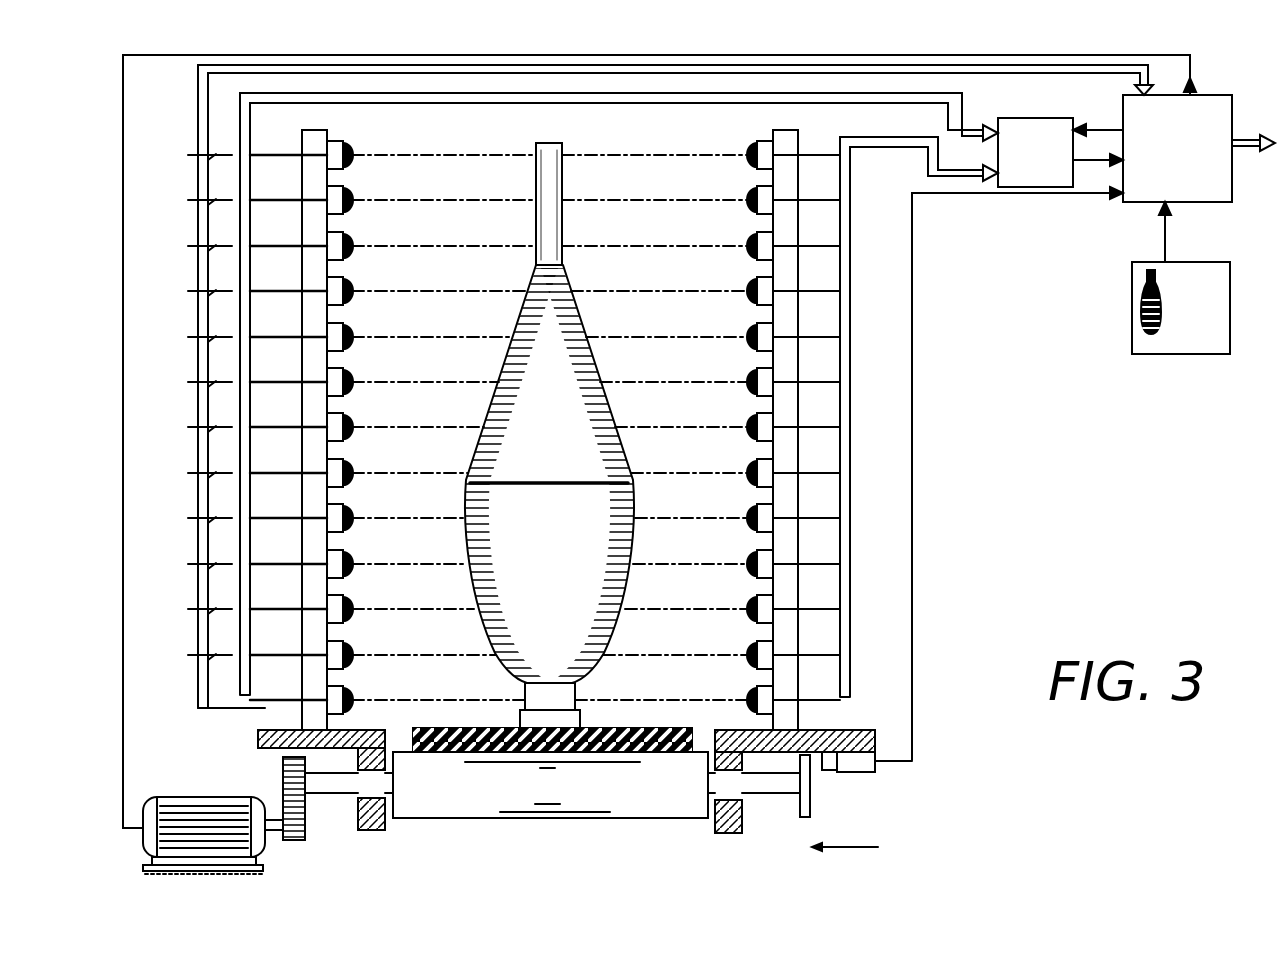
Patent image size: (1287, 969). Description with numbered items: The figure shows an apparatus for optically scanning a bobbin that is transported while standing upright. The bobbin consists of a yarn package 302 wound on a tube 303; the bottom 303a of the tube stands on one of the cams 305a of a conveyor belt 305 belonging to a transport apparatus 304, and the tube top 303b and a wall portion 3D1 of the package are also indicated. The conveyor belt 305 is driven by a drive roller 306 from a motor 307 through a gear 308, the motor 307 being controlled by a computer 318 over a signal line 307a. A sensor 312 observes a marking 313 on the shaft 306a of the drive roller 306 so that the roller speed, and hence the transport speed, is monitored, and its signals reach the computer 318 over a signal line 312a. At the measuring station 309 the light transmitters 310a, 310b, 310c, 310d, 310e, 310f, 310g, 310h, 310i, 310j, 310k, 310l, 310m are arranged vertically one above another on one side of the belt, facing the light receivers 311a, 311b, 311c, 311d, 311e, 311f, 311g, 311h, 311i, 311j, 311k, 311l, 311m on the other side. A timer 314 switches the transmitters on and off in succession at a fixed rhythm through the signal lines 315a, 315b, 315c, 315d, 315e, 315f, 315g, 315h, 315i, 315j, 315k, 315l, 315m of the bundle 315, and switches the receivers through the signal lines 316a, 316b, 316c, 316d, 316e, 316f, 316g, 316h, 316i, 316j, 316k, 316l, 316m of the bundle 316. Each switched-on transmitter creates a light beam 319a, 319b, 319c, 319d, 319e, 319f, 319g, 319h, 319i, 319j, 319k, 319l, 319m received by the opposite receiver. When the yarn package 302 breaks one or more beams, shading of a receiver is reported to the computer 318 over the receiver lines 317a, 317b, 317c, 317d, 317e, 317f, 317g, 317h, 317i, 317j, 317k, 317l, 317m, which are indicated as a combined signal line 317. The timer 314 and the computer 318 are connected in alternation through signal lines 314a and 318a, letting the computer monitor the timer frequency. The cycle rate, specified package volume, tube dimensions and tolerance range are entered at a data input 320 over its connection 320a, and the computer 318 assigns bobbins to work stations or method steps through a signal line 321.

The yarn package 302 is at (549, 413).
The tube 303 is at (536, 152).
The bottom of the tube 303a is at (580, 694).
The neck top opening 303b is at (558, 143).
The container wall 3D1 is at (570, 156).
The transport apparatus 304 is at (865, 851).
The conveyor belt 305 is at (552, 727).
The cams 305a is at (583, 722).
The drive roller 306 is at (488, 818).
The shaft of the drive roller 306a is at (783, 797).
The motor 307 is at (213, 798).
The signal line 307a is at (123, 150).
The gear 308 is at (307, 820).
The measuring station 309 is at (935, 574).
The light transmitter 310m is at (790, 150).
The light transmitter 310l is at (770, 197).
The light transmitter 310k is at (770, 243).
The light transmitter 310j is at (770, 288).
The light transmitter 310i is at (770, 334).
The light transmitter 310h is at (770, 379).
The light transmitter 310g is at (770, 424).
The light transmitter 310f is at (770, 470).
The light transmitter 310e is at (770, 515).
The light transmitter 310d is at (770, 561).
The light transmitter 310c is at (770, 606).
The light transmitter 310b is at (770, 652).
The light transmitter 310a is at (770, 697).
The light receiver 311m is at (354, 154).
The light receiver 311l is at (354, 199).
The light receiver 311k is at (354, 245).
The light receiver 311j is at (354, 290).
The light receiver 311i is at (354, 336).
The light receiver 311h is at (354, 381).
The light receiver 311g is at (354, 426).
The light receiver 311f is at (354, 472).
The light receiver 311e is at (354, 517).
The light receiver 311d is at (354, 563).
The light receiver 311c is at (354, 608).
The light receiver 311b is at (354, 654).
The light receiver 311a is at (354, 699).
The sensor 312 is at (836, 770).
The signal line 312a is at (918, 761).
The marking 313 is at (812, 770).
The timer 314 is at (1035, 117).
The signal line 314a is at (1095, 168).
The signal lines 315 is at (878, 135).
The signal line 315m is at (843, 156).
The signal line 315l is at (843, 201).
The signal line 315k is at (843, 247).
The signal line 315j is at (843, 292).
The signal line 315i is at (843, 338).
The signal line 315h is at (843, 383).
The signal line 315g is at (843, 428).
The signal line 315f is at (843, 474).
The signal line 315e is at (843, 519).
The signal line 315d is at (843, 565).
The signal line 315c is at (843, 610).
The signal line 315b is at (843, 656).
The signal line 315a is at (843, 699).
The signal lines 316 is at (455, 100).
The signal line 316m is at (288, 157).
The signal line 316l is at (288, 202).
The signal line 316k is at (288, 248).
The signal line 316j is at (288, 293).
The signal line 316i is at (288, 339).
The signal line 316h is at (288, 384).
The signal line 316g is at (288, 429).
The signal line 316f is at (288, 475).
The signal line 316e is at (288, 520).
The signal line 316d is at (288, 566).
The signal line 316c is at (288, 611).
The signal line 316b is at (288, 657).
The signal line 316a is at (258, 712).
The combined signal line 317 is at (197, 88).
The signal line 317m is at (184, 155).
The signal line 317l is at (184, 200).
The signal line 317k is at (184, 246).
The signal line 317j is at (184, 291).
The signal line 317i is at (184, 337).
The signal line 317h is at (184, 382).
The signal line 317g is at (184, 427).
The signal line 317f is at (184, 473).
The signal line 317e is at (184, 518).
The signal line 317d is at (184, 564).
The signal line 317c is at (184, 609).
The signal line 317b is at (184, 655).
The signal line 317a is at (200, 712).
The computer 318 is at (1232, 100).
The signal line 318a is at (1100, 128).
The light beam 319m is at (716, 145).
The light beam 319l is at (716, 190).
The light beam 319k is at (716, 236).
The light beam 319j is at (716, 281).
The light beam 319i is at (716, 327).
The light beam 319h is at (716, 372).
The light beam 319g is at (716, 417).
The light beam 319f is at (716, 463).
The light beam 319e is at (716, 508).
The light beam 319d is at (716, 554).
The light beam 319c is at (716, 599).
The light beam 319b is at (716, 645).
The light beam 319a is at (716, 690).
The data input 320 is at (1228, 306).
The data input line 320a is at (1167, 240).
The signal line 321 is at (1243, 150).